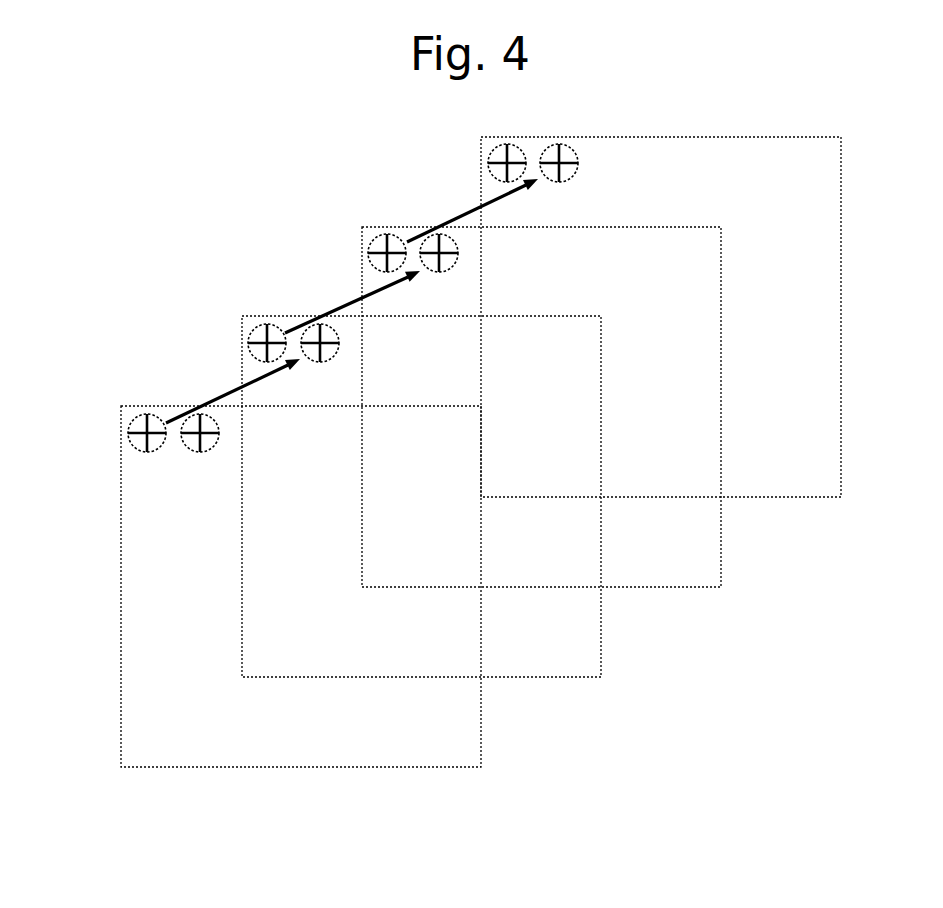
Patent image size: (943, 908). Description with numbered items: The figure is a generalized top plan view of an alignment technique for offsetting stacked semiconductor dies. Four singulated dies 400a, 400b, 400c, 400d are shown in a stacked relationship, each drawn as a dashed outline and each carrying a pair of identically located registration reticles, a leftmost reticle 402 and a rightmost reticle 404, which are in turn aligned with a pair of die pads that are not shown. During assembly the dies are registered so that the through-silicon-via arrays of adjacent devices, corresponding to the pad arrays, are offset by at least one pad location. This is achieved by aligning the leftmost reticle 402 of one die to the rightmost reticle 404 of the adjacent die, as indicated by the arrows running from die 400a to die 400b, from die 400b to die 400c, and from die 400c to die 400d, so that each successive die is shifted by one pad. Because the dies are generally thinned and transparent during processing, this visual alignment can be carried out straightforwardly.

The die 400a is at (460, 447).
The die 400b is at (589, 359).
The die 400c is at (711, 268).
The die 400d is at (828, 178).
The leftmost registration reticle 402 is at (137, 451).
The rightmost registration reticle 404 is at (188, 453).